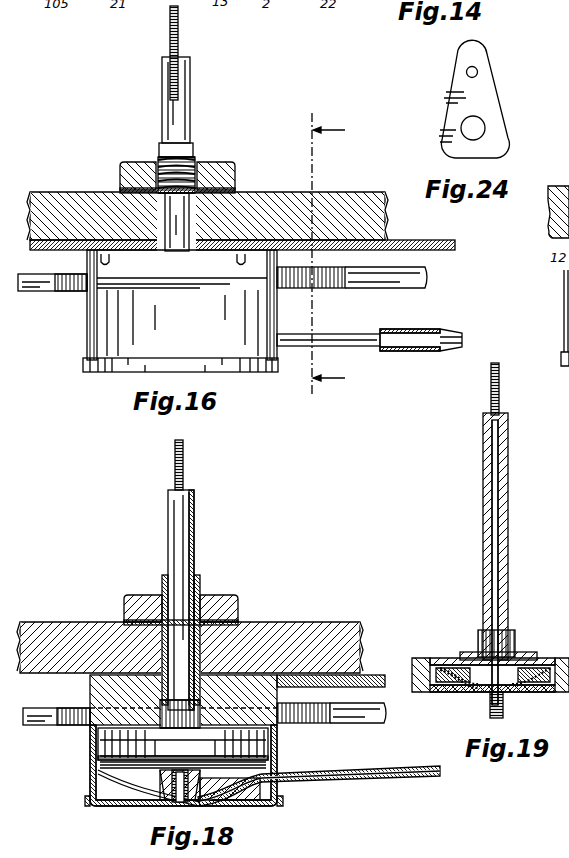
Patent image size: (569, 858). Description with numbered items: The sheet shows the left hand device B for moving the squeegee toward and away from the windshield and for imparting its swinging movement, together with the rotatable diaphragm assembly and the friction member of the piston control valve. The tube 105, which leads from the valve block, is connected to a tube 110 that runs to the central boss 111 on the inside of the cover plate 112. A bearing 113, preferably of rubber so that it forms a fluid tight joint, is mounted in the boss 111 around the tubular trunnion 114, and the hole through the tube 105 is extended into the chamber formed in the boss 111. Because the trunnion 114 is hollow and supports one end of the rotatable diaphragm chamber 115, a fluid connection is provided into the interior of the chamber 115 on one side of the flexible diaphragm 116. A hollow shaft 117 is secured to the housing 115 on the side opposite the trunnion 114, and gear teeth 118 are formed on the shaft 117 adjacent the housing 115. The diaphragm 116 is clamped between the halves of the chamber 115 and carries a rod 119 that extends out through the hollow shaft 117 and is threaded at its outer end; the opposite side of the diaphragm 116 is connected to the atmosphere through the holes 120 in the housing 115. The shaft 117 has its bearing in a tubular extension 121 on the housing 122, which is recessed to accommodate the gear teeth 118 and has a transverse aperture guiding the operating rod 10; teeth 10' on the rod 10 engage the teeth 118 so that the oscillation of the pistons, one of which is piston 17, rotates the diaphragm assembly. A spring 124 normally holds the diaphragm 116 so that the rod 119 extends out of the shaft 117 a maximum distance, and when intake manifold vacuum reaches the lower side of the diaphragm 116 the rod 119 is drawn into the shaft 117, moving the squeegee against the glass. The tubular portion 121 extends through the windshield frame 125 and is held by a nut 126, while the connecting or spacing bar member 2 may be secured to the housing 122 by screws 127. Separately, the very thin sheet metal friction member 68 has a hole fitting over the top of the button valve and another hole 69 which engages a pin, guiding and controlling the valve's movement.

In FIG. 16, the connecting or spacing bar member 2 is at (385, 245).
In FIG. 18, the connecting or spacing bar member 2 is at (331, 681).
In FIG. 16, the operating rod 10 is at (386, 291).
In FIG. 18, the operating rod 10 is at (358, 704).
In FIG. 16, the teeth 10' is at (181, 291).
In FIG. 18, the teeth 10' is at (182, 706).
In FIG. 16, the piston 17 is at (329, 257).
In FIG. 24, the friction member 68 is at (483, 66).
In FIG. 24, the hole 69 is at (478, 60).
In FIG. 16, the tube 105 is at (406, 352).
In FIG. 18, the tube 105 is at (416, 778).
In FIG. 16, the tube 110 is at (302, 348).
In FIG. 18, the central boss 111 is at (160, 784).
In FIG. 16, the cover plate 112 is at (123, 366).
In FIG. 18, the cover plate 112 is at (102, 806).
In FIG. 18, the bearing 113 is at (100, 772).
In FIG. 18, the tubular trunnion 114 is at (172, 802).
In FIG. 19, the tubular trunnion 114 is at (490, 708).
In FIG. 19, the diaphragm chamber 115 is at (427, 694).
In FIG. 19, the flexible diaphragm 116 is at (540, 662).
In FIG. 16, the hollow shaft 117 is at (176, 154).
In FIG. 18, the hollow shaft 117 is at (185, 516).
In FIG. 19, the hollow shaft 117 is at (508, 480).
In FIG. 18, the gear teeth 118 is at (183, 728).
In FIG. 19, the gear teeth 118 is at (480, 640).
In FIG. 16, the rod 119 is at (180, 42).
In FIG. 18, the rod 119 is at (175, 457).
In FIG. 19, the rod 119 is at (500, 386).
In FIG. 19, the holes 120 is at (440, 666).
In FIG. 16, the tubular extension 121 is at (185, 215).
In FIG. 18, the tubular extension 121 is at (164, 582).
In FIG. 18, the housing 122 is at (112, 694).
In FIG. 19, the spring 124 is at (520, 690).
In FIG. 16, the windshield frame 125 is at (78, 218).
In FIG. 18, the windshield frame 125 is at (282, 630).
In FIG. 16, the nut 126 is at (212, 163).
In FIG. 18, the nut 126 is at (225, 604).
In FIG. 16, the screws 127 is at (92, 255).
In FIG. 16, the left hand device B is at (116, 317).